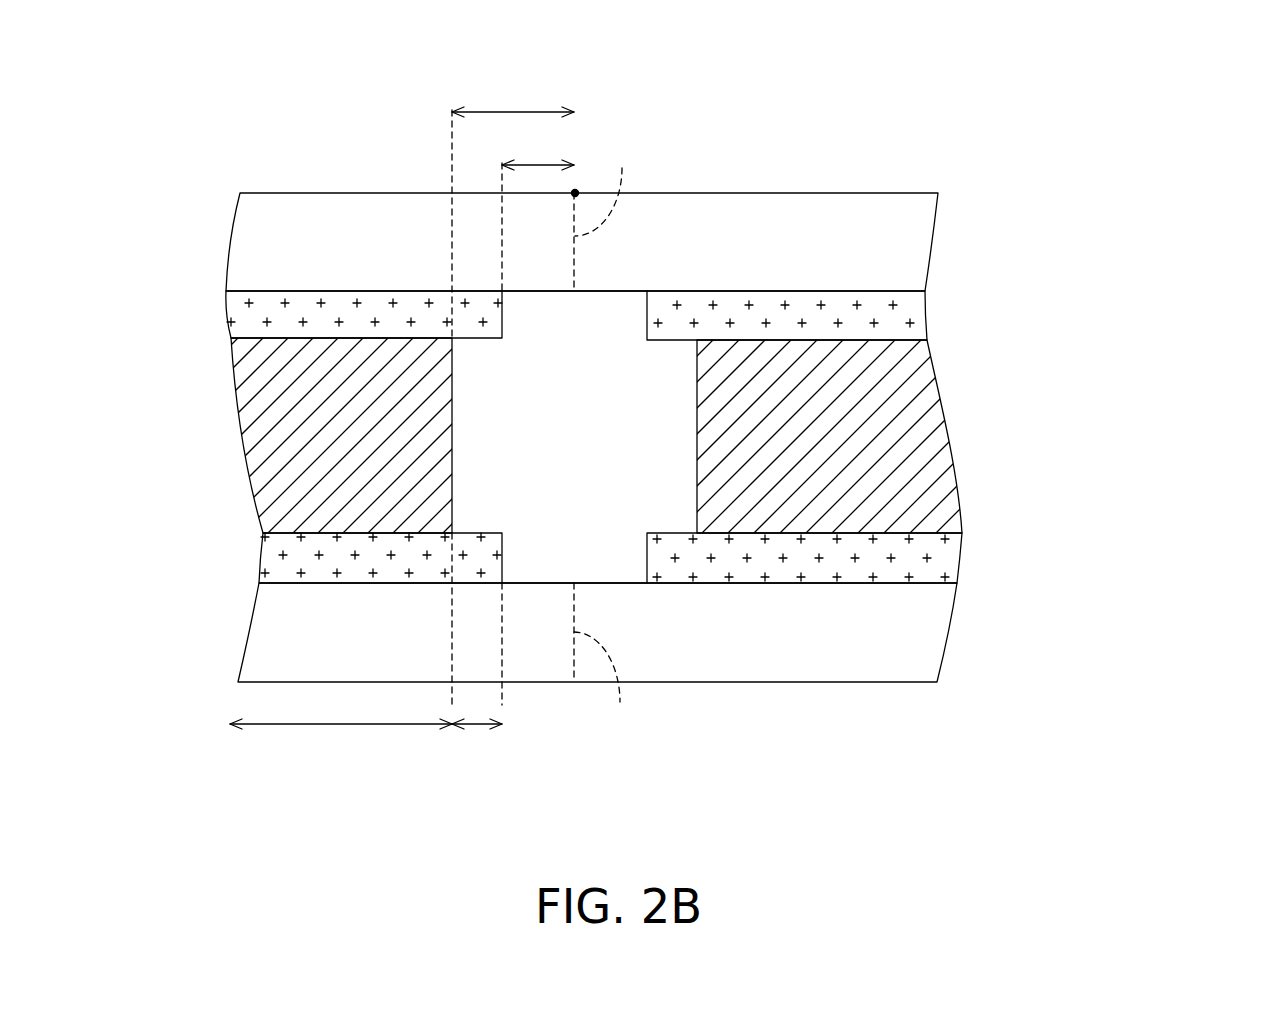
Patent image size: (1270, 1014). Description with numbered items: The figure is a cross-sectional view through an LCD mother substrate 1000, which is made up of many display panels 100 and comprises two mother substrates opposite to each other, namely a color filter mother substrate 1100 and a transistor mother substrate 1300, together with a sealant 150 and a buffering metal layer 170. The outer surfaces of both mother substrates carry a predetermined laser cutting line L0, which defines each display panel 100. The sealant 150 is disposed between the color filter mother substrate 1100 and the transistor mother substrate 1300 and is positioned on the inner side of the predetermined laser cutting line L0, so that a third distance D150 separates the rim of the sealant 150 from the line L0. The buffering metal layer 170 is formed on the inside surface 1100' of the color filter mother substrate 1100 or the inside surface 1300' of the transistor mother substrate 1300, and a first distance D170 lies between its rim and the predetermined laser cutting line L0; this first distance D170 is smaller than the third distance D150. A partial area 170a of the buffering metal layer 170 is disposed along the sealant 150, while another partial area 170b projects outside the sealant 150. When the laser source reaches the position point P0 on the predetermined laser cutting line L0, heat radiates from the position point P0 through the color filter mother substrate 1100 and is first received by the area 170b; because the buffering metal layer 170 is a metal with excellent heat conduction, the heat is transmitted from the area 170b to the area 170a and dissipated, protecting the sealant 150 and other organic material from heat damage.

The LCD mother substrate 1000 is at (1247, 61).
The display panel 100 is at (373, 193).
The color filter mother substrate 1100 is at (520, 242).
The transistor mother substrate 1300 is at (528, 632).
The sealant 150 is at (950, 451).
The buffering metal layer 170 is at (240, 311).
The inside surface of the color filter mother substrate 1100' is at (611, 248).
The inside surface of the transistor mother substrate 1300' is at (615, 641).
The position point P0 is at (575, 193).
The predetermined laser cutting line L0 is at (602, 455).
The third distance D150 is at (513, 205).
The first distance D170 is at (534, 207).
The partial area of the buffering metal layer 170a is at (341, 650).
The partial area of the buffering metal layer 170b is at (476, 675).